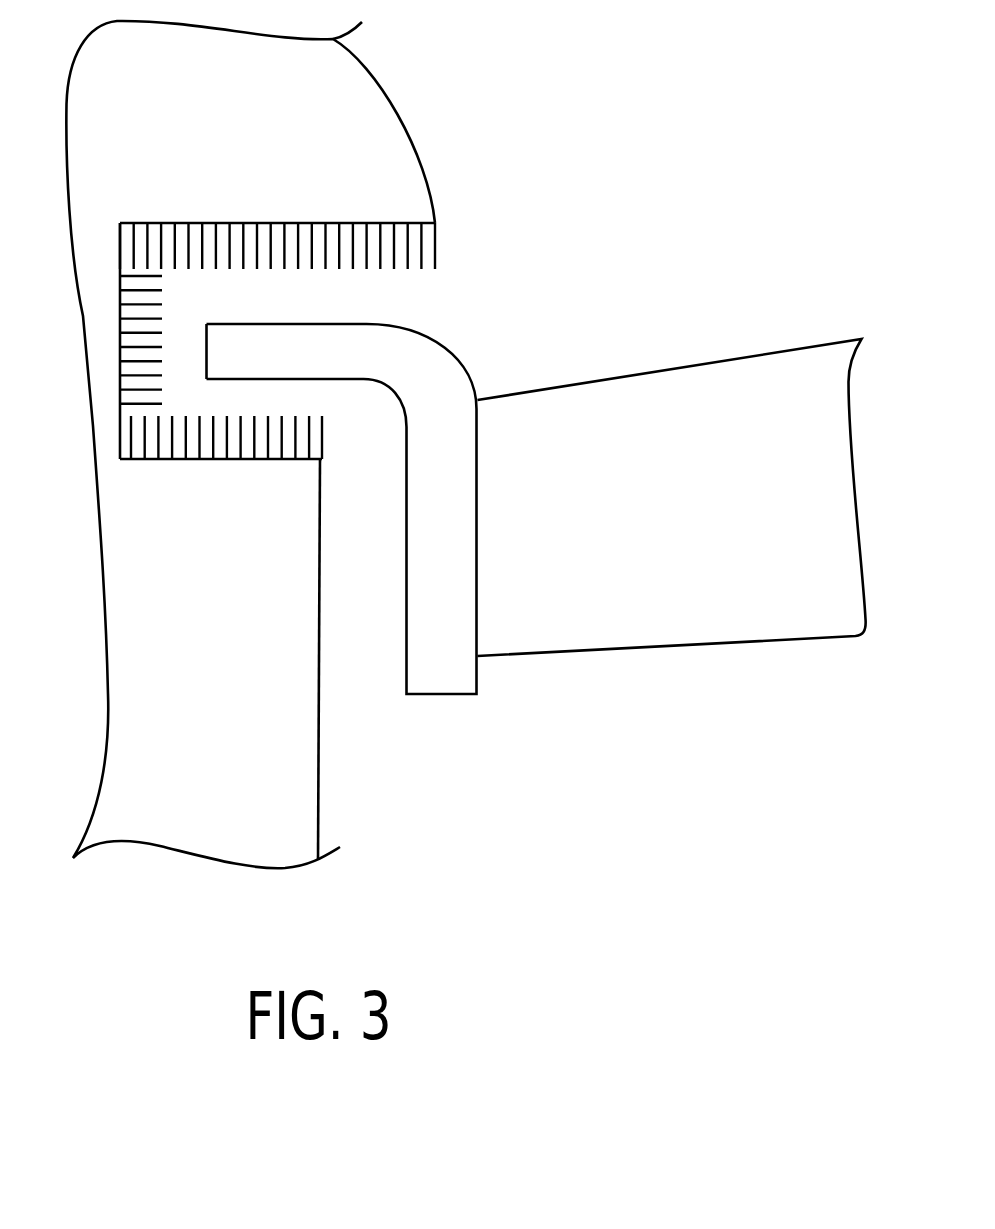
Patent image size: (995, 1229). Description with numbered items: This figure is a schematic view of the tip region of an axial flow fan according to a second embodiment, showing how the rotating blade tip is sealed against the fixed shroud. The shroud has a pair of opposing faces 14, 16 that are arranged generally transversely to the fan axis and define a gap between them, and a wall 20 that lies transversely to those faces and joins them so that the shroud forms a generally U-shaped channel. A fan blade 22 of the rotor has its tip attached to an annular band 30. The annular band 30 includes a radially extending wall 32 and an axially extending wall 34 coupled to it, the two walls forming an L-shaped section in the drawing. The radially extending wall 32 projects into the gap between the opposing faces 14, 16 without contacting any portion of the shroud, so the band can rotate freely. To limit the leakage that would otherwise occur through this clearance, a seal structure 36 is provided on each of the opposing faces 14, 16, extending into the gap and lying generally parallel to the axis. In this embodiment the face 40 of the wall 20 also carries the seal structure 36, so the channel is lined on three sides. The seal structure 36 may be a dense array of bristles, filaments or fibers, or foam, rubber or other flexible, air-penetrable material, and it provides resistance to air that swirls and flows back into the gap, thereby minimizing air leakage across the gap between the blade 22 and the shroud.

The opposing face 14 is at (188, 453).
The opposing face 16 is at (165, 222).
The wall 20 is at (117, 348).
The fan blade 22 is at (672, 634).
The annular band 30 is at (379, 489).
The radially extending wall 32 is at (360, 318).
The axially extending wall 34 is at (475, 570).
The seal structure 36 is at (329, 246).
The face 40 is at (121, 419).